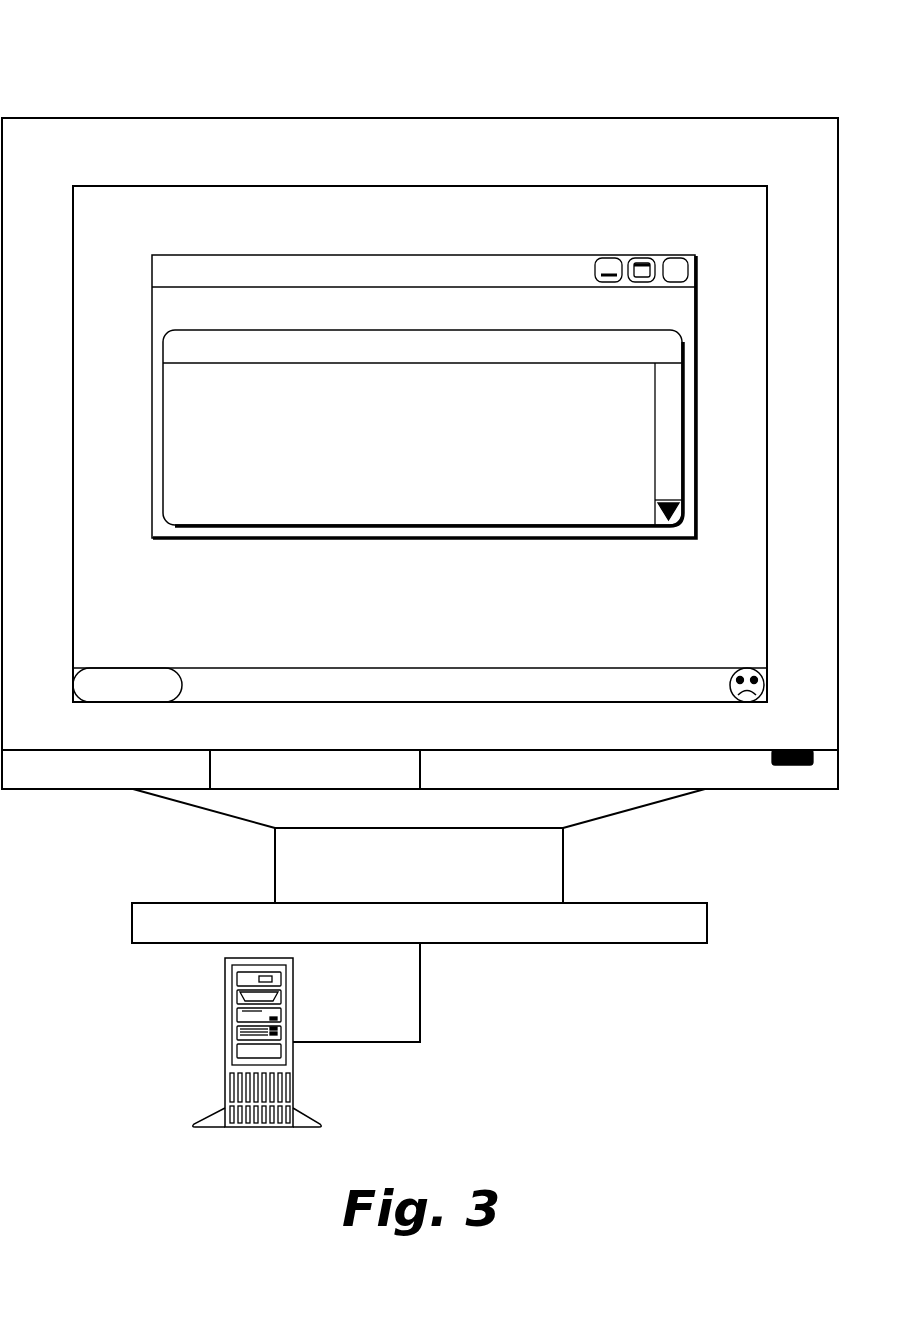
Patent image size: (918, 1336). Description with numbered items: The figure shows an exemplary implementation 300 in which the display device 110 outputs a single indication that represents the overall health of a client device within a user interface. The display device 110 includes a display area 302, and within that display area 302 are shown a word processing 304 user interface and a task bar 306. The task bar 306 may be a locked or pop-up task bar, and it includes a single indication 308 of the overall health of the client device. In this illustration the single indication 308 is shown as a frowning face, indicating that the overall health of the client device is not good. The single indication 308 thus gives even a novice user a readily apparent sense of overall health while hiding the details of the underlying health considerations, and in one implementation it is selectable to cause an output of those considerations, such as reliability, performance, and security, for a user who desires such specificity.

The exemplary implementation 300 is at (138, 42).
The display device 110 is at (420, 118).
The display area 302 is at (420, 444).
The word processing user interface 304 is at (500, 255).
The task bar 306 is at (183, 668).
The single indication 308 is at (745, 668).